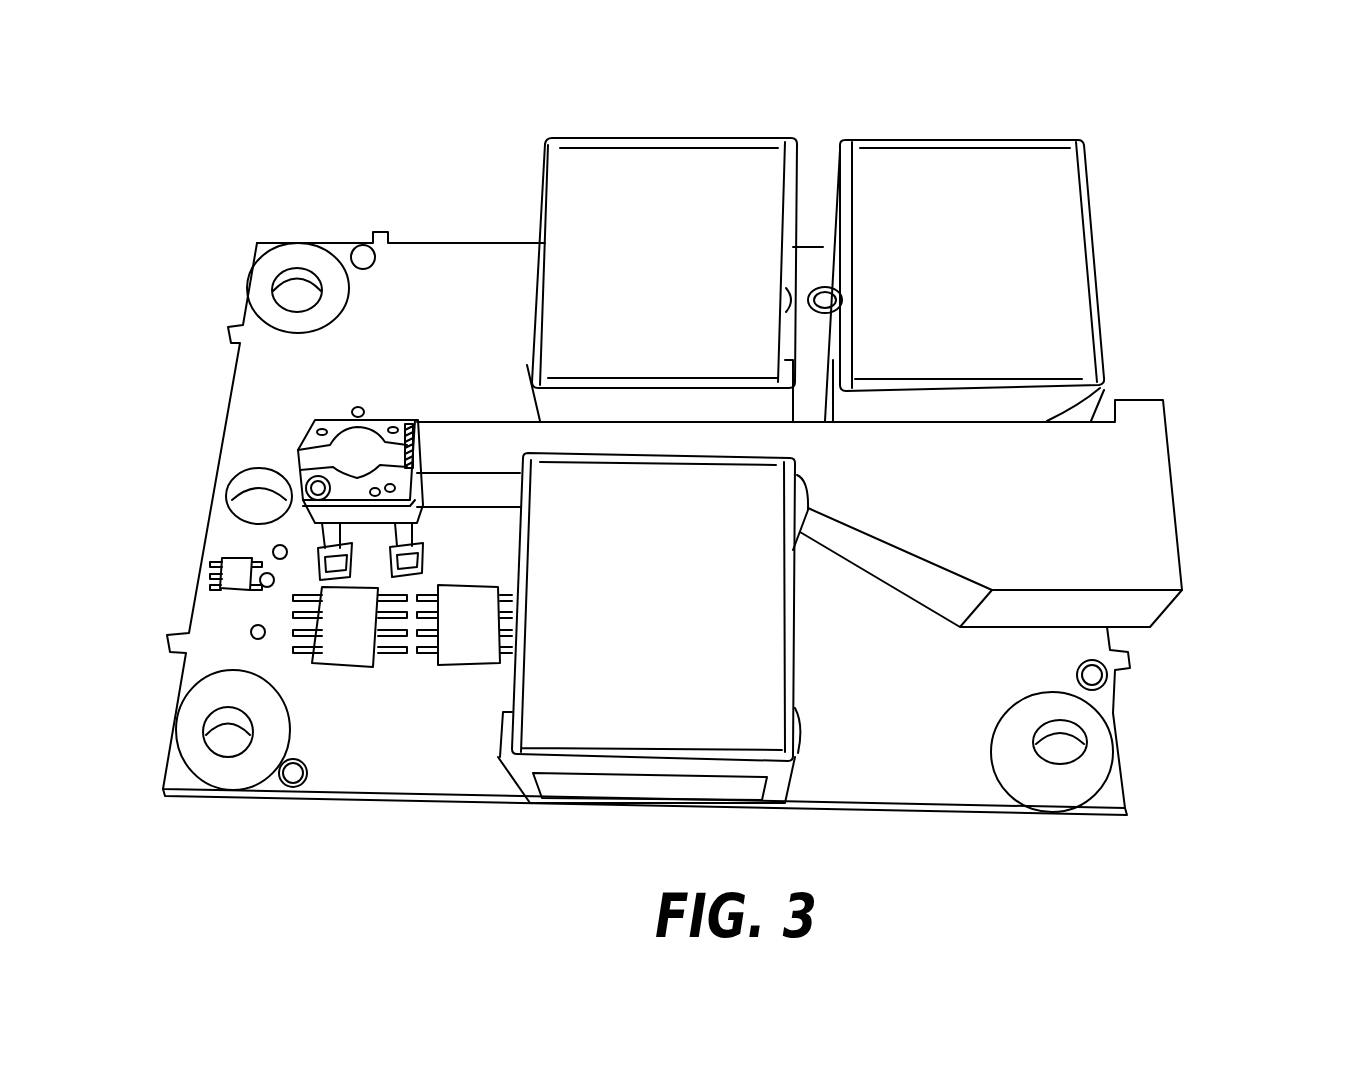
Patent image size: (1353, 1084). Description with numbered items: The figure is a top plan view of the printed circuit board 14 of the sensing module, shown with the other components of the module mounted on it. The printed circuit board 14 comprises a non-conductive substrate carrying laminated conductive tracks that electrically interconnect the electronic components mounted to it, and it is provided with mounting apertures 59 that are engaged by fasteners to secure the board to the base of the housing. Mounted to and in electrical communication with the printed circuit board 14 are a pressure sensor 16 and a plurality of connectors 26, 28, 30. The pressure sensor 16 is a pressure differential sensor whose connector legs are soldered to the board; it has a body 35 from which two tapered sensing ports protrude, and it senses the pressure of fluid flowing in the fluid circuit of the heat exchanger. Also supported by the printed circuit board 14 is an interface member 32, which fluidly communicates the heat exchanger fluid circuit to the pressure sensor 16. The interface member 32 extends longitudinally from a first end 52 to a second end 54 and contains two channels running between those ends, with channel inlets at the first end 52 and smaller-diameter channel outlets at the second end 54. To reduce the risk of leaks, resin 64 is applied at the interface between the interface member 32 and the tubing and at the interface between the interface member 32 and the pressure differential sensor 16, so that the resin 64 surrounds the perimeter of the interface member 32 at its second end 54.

The printed circuit board 14 is at (290, 257).
The pressure sensor 16 is at (291, 382).
The connector 26 is at (658, 182).
The connector 28 is at (952, 170).
The connector 30 is at (633, 728).
The interface member 32 is at (1037, 513).
The body 35 is at (381, 425).
The first end 52 is at (1172, 458).
The second end 54 is at (410, 425).
The mounting apertures 59 is at (290, 285).
The resin 64 is at (403, 432).